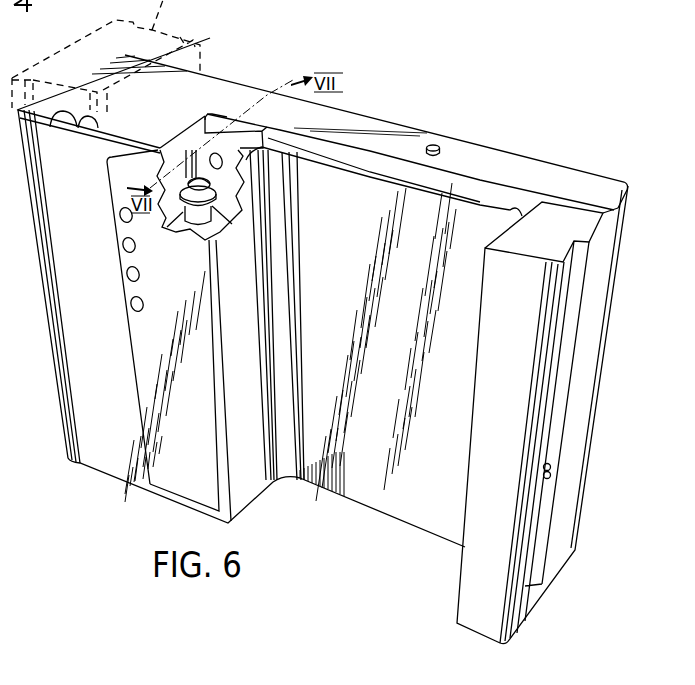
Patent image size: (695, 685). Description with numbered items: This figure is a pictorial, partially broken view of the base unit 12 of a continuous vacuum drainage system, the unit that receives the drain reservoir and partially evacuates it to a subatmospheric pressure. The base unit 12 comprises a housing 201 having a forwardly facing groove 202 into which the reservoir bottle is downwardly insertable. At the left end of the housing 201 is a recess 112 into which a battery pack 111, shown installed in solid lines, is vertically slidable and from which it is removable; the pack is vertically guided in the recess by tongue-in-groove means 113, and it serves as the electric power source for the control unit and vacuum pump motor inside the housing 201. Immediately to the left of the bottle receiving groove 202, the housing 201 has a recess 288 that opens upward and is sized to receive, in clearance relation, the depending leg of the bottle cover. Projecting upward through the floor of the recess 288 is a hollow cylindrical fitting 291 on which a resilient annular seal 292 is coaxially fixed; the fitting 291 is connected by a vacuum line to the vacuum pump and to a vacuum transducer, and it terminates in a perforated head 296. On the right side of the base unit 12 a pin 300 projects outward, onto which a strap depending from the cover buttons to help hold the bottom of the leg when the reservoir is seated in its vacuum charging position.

The base unit 12 is at (578, 561).
The battery pack 111 is at (163, 93).
The recess 112 is at (52, 122).
The tongue-in-groove means 113 is at (80, 130).
The housing 201 is at (540, 136).
The forwardly facing groove 202 is at (481, 213).
The recess 288 is at (224, 168).
The hollow cylindrical fitting 291 is at (206, 241).
The resilient annular seal 292 is at (215, 192).
The perforated head 296 is at (206, 185).
The pin 300 is at (551, 471).